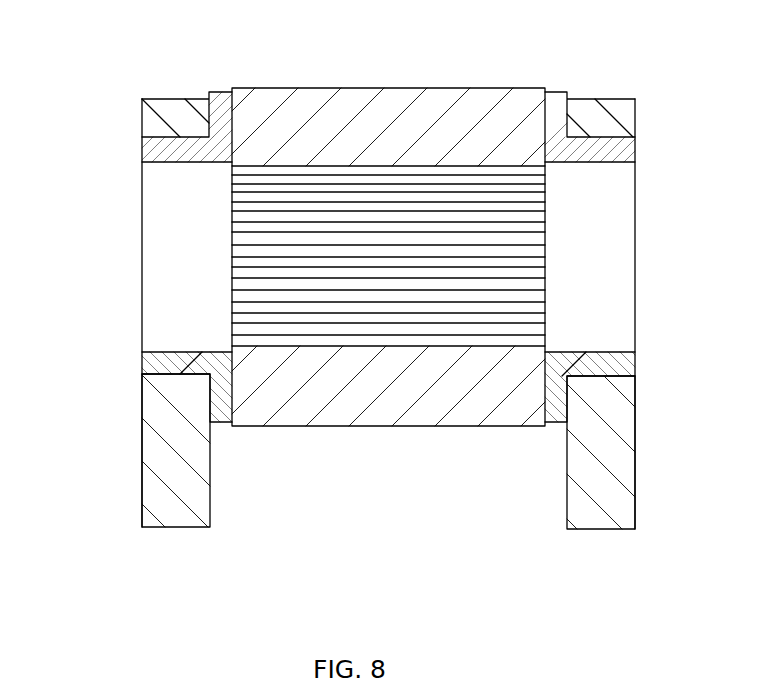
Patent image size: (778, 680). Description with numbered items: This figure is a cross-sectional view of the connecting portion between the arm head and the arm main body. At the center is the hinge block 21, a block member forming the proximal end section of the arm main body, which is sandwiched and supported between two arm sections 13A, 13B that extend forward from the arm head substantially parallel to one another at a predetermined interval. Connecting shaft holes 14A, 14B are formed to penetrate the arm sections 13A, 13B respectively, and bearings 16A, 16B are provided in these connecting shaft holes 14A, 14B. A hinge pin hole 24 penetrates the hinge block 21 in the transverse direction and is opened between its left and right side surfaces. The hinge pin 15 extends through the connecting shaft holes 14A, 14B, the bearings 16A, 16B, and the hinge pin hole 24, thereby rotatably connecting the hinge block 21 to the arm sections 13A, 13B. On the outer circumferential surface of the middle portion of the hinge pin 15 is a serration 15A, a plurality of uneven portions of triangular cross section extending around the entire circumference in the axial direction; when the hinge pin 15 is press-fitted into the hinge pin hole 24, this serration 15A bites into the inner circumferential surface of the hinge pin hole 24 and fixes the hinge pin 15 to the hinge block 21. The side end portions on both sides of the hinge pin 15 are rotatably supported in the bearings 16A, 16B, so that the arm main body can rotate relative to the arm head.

The arm section 13A is at (142, 473).
The arm section 13B is at (635, 458).
The connecting shaft hole 14A is at (170, 140).
The connecting shaft hole 14B is at (597, 142).
The hinge pin 15 is at (635, 243).
The serration 15A is at (383, 303).
The bearing 16A is at (178, 352).
The bearing 16B is at (546, 378).
The hinge block 21 is at (412, 88).
The hinge pin hole 24 is at (294, 170).